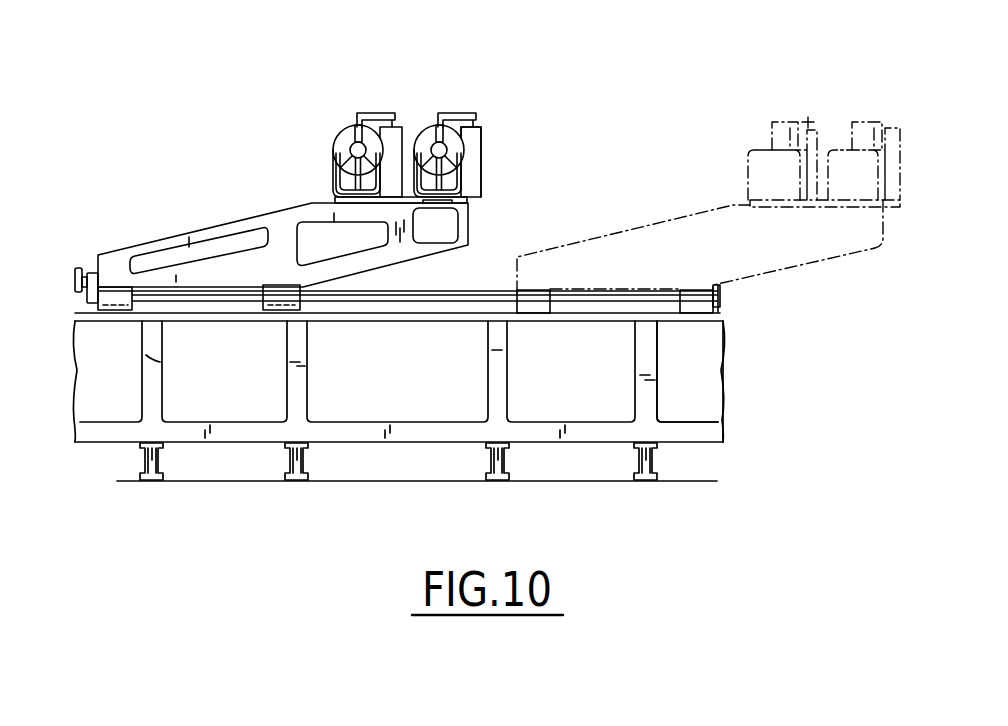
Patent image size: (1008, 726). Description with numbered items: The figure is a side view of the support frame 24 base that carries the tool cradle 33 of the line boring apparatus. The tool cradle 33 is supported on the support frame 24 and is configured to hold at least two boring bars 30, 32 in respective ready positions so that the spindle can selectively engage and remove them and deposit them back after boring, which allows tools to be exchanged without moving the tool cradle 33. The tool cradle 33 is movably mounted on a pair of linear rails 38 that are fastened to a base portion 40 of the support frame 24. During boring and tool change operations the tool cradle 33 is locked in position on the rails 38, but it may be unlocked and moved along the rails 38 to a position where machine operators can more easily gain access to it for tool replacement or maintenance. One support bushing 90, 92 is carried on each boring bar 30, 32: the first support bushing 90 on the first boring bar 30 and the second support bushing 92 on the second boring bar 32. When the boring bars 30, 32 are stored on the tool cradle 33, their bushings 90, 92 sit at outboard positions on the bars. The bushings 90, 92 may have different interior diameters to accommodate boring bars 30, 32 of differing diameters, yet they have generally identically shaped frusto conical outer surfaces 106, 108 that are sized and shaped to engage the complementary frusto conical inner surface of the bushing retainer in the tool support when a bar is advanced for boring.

The support frame 24 is at (702, 382).
The boring bar 30 is at (350, 143).
The boring bar 32 is at (452, 143).
The tool cradle 33 is at (480, 148).
The linear rails 38 is at (433, 293).
The base portion 40 is at (698, 343).
The support bushing 90 is at (333, 151).
The support bushing 92 is at (453, 166).
The frusto conical outer surface 106 is at (346, 139).
The frusto conical outer surface 108 is at (420, 130).